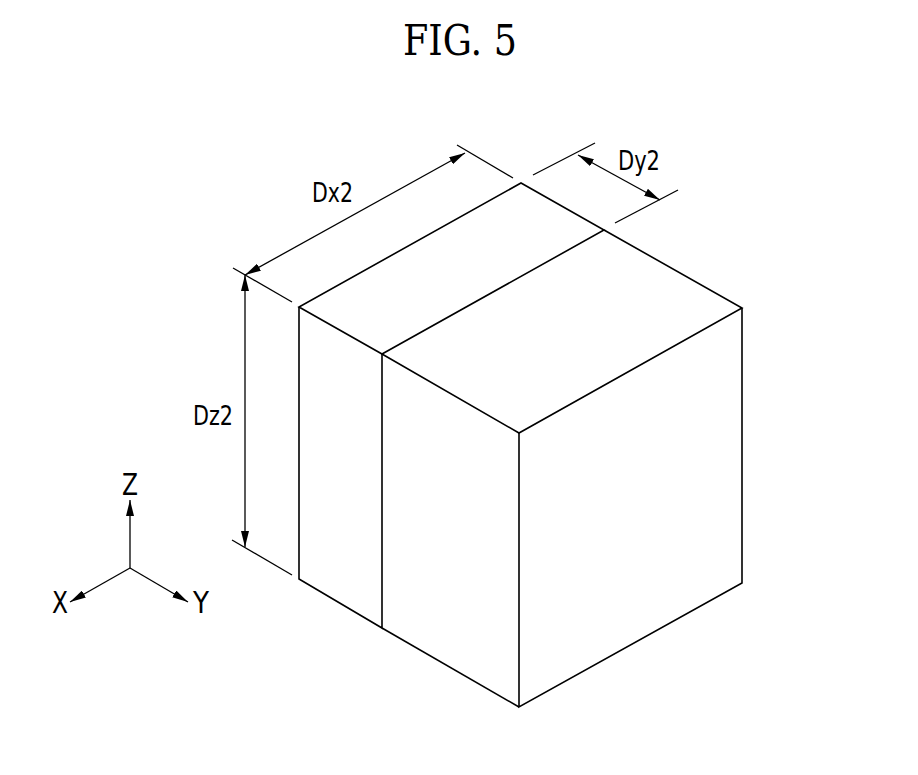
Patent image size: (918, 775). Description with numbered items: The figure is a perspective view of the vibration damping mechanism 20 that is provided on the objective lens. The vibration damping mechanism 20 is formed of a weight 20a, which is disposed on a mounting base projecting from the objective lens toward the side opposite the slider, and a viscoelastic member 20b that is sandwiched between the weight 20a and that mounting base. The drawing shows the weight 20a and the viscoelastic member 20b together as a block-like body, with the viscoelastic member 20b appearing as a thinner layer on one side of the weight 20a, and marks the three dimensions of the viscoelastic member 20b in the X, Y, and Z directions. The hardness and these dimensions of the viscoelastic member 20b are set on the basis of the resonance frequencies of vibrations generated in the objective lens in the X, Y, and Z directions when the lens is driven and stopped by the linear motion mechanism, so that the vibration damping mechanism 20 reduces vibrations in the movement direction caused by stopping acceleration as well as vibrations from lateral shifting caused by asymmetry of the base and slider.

The vibration damping mechanism 20 is at (548, 445).
The weight 20a is at (582, 468).
The viscoelastic member 20b is at (550, 240).